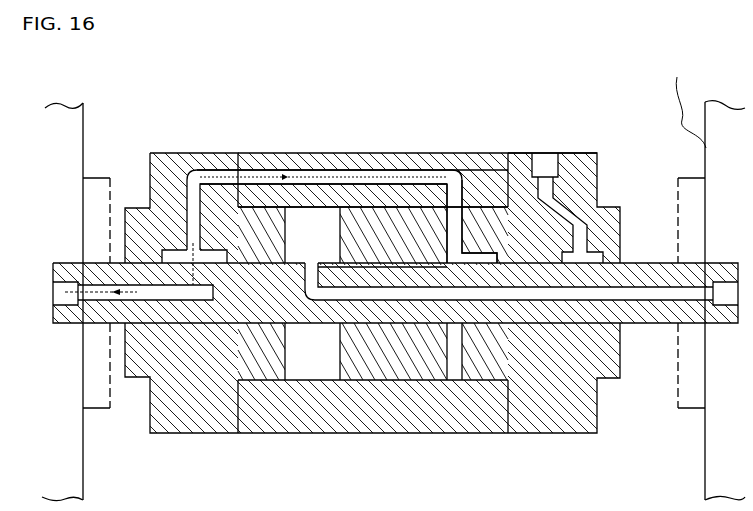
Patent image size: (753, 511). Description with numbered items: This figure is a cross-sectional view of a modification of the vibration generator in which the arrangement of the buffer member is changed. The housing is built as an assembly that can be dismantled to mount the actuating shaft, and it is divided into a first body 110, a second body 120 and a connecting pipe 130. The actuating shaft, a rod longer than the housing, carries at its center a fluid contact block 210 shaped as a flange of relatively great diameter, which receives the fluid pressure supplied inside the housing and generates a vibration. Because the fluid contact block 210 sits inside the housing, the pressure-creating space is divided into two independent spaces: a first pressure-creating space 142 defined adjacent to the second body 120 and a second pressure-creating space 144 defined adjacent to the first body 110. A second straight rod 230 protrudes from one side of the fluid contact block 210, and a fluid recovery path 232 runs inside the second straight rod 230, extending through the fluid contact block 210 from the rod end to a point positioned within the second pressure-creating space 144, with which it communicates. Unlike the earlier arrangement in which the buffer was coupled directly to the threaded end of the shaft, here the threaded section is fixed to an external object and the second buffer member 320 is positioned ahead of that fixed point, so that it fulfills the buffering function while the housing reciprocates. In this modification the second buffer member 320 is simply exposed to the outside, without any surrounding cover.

The first body 110 is at (178, 152).
The second body 120 is at (590, 152).
The connecting pipe 130 is at (470, 165).
The first pressure-creating space 142 is at (423, 233).
The second pressure-creating space 144 is at (310, 232).
The fluid contact block 210 is at (377, 237).
The second straight rod 230 is at (647, 325).
The fluid recovery path 232 is at (397, 292).
The second buffer member 320 is at (107, 398).